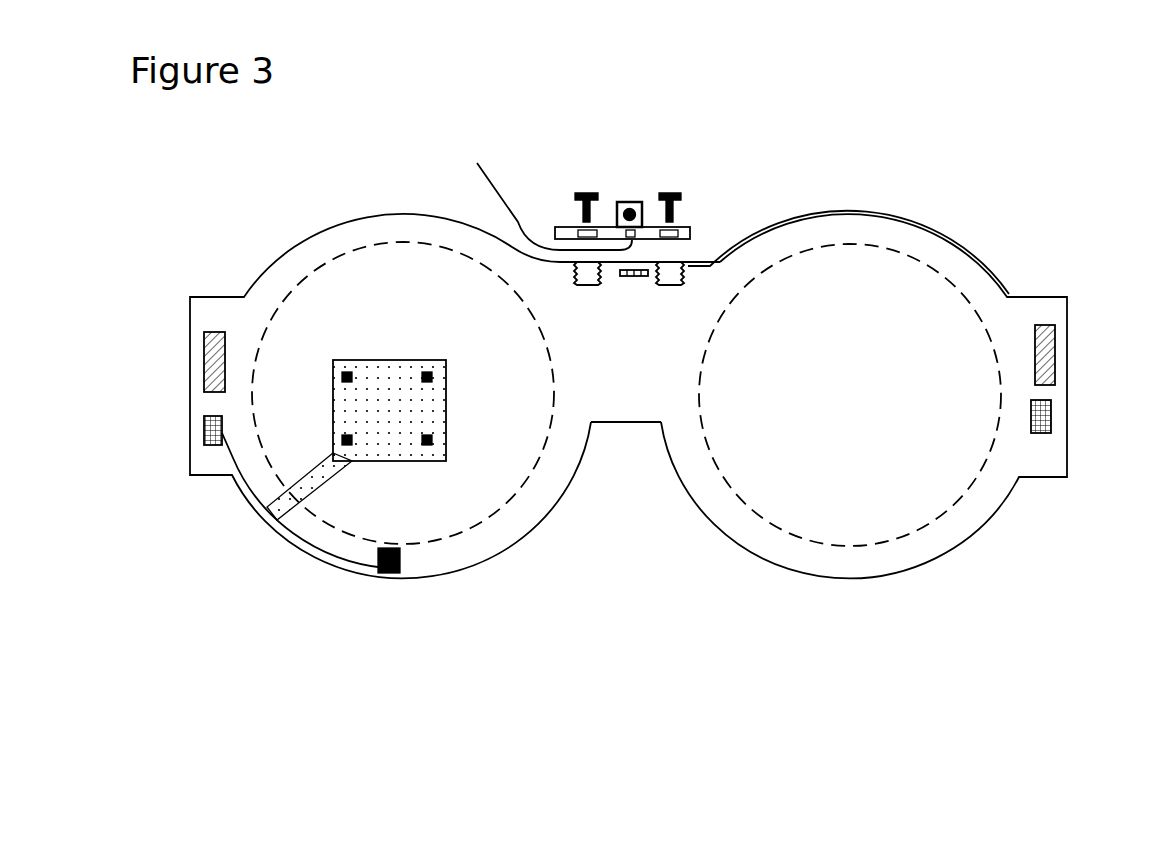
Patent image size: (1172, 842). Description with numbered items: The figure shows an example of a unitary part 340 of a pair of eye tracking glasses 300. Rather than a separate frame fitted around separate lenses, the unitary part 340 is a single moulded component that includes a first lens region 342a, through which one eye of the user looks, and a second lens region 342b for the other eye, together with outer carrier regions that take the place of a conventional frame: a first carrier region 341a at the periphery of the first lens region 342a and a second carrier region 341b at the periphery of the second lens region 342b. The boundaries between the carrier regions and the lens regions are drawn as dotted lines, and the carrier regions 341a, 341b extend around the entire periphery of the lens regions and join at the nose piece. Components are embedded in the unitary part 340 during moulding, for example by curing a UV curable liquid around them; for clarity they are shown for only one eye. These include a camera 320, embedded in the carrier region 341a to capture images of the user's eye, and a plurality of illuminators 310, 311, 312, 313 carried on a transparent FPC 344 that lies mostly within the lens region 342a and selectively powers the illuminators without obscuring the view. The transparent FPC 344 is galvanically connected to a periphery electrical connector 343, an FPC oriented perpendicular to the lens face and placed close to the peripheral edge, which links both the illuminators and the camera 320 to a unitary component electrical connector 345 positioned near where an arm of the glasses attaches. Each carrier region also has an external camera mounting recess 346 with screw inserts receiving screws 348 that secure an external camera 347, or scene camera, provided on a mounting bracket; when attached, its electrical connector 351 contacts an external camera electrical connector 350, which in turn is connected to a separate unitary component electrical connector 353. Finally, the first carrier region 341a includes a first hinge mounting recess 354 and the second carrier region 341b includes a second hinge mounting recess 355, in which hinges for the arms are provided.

The eye tracking glasses 300 is at (924, 180).
The illuminator 310 is at (432, 376).
The illuminator 311 is at (432, 440).
The illuminator 312 is at (342, 440).
The illuminator 313 is at (342, 376).
The camera 320 is at (398, 560).
The unitary part 340 is at (295, 248).
The first carrier region 341a is at (265, 292).
The second carrier region 341b is at (787, 245).
The first lens region 342a is at (395, 282).
The second lens region 342b is at (848, 283).
The periphery electrical connector 343 is at (242, 477).
The transparent FPC 344 is at (315, 495).
The unitary component electrical connector 345 is at (203, 420).
The external camera mounting recess 346 is at (587, 287).
The external camera 347 is at (627, 202).
The screw 348 is at (580, 193).
The external camera electrical connector 350 is at (635, 280).
The electrical connector 351 is at (539, 195).
The unitary component electrical connector 353 is at (1052, 412).
The first hinge mounting recess 354 is at (205, 355).
The second hinge mounting recess 355 is at (1056, 350).